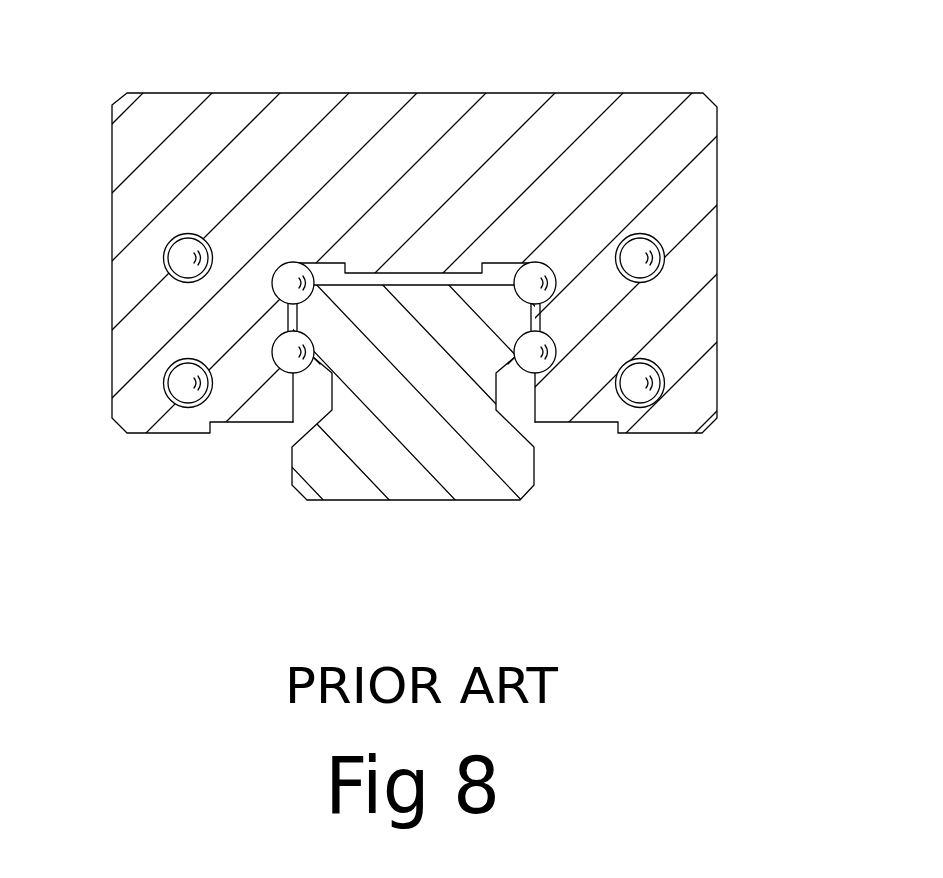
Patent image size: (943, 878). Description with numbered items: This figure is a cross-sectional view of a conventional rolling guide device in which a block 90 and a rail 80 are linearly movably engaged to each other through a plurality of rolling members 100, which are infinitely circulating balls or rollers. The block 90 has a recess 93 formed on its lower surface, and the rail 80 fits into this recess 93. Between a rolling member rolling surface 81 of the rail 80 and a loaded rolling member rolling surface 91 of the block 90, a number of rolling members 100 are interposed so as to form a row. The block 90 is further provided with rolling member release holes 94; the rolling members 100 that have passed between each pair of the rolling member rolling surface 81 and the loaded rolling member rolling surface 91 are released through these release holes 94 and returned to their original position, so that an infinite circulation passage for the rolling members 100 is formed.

The rail 80 is at (425, 501).
The rolling member rolling surface 81 is at (313, 288).
The block 90 is at (728, 133).
The loaded rolling member rolling surface 91 is at (288, 264).
The recess 93 is at (495, 262).
The rolling member release hole 94 is at (171, 240).
The rolling member 100 is at (285, 345).